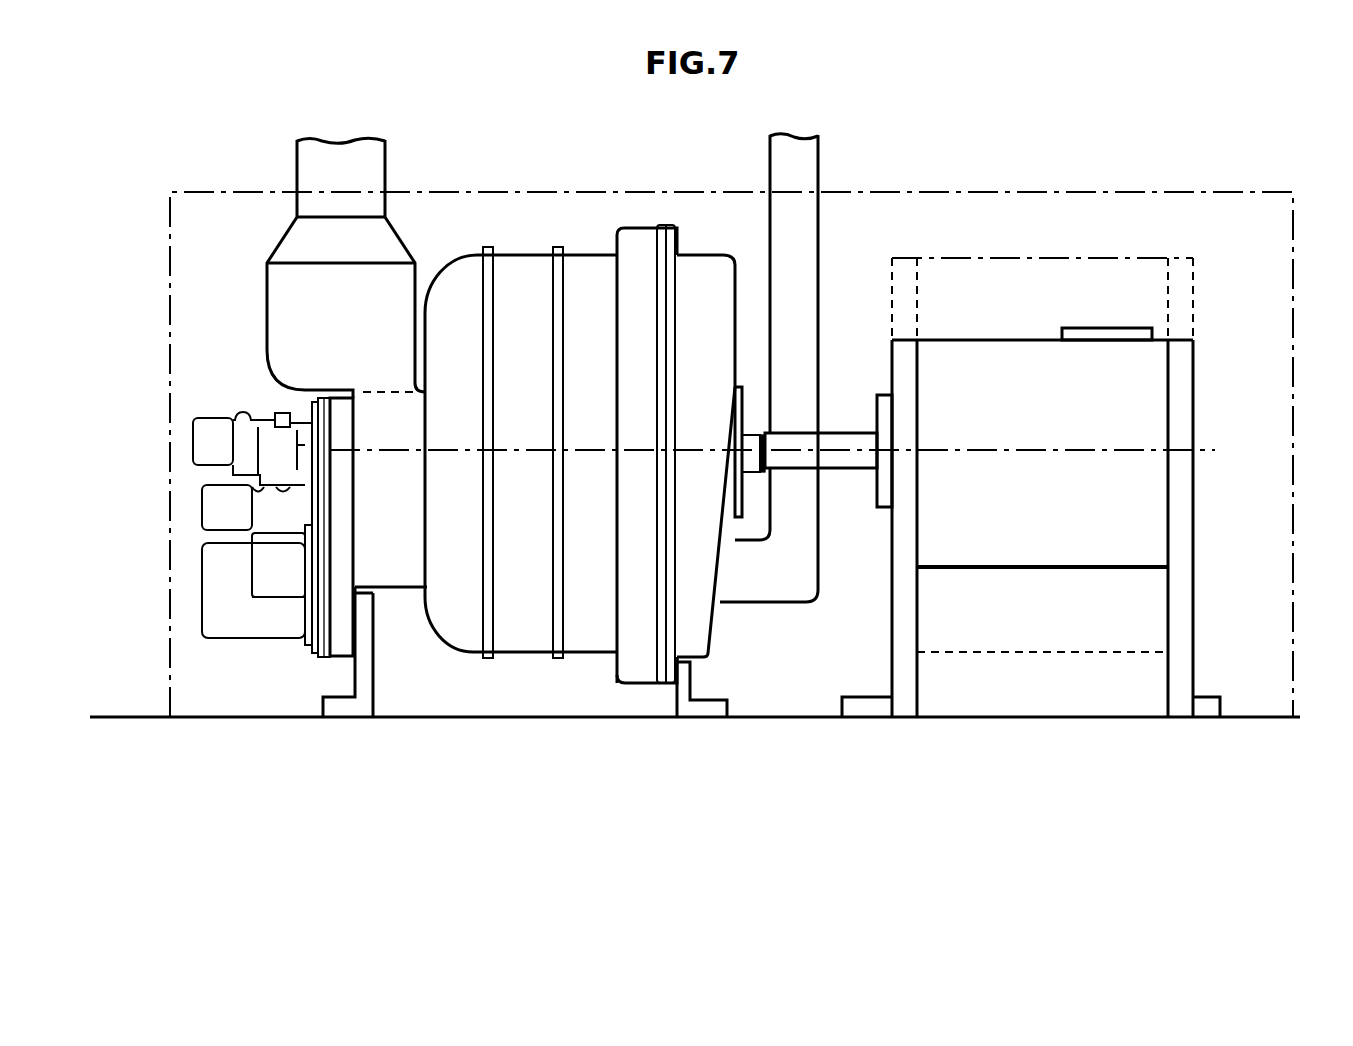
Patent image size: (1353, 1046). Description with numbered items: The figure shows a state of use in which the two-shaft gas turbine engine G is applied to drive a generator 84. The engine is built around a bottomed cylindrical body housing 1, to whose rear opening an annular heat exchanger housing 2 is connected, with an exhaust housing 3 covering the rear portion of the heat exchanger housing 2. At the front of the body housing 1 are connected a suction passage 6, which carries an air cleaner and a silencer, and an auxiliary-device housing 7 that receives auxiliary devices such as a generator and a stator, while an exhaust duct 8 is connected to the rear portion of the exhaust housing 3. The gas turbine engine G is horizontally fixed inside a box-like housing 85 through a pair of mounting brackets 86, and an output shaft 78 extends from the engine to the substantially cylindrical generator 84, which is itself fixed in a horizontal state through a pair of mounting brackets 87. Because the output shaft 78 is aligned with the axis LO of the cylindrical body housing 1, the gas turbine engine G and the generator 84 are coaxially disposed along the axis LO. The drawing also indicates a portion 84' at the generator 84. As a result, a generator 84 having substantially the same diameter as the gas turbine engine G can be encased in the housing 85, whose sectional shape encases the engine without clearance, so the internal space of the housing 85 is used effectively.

The body housing 1 is at (528, 383).
The heat exchanger housing 2 is at (643, 388).
The exhaust housing 3 is at (708, 388).
The suction passage 6 is at (272, 300).
The auxiliary-device housing 7 is at (240, 630).
The exhaust duct 8 is at (818, 560).
The output shaft 78 is at (762, 437).
The generator 84 is at (1073, 487).
The load machine cover 84' is at (1076, 274).
The housing 85 is at (1063, 193).
The mounting brackets 86 is at (334, 700).
The mounting brackets 87 is at (867, 695).
The gas turbine engine G is at (582, 247).
The axis LO is at (1065, 452).